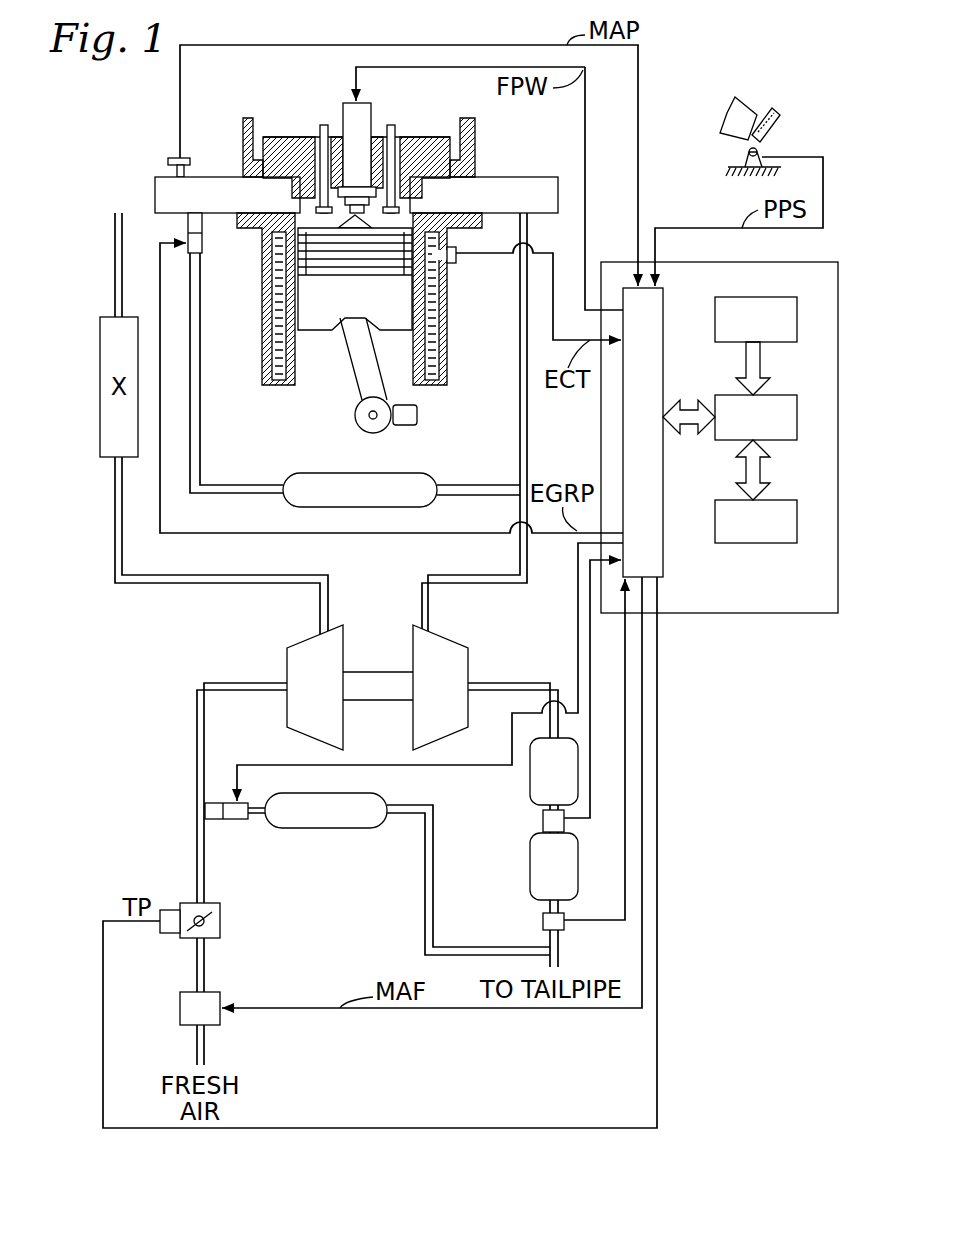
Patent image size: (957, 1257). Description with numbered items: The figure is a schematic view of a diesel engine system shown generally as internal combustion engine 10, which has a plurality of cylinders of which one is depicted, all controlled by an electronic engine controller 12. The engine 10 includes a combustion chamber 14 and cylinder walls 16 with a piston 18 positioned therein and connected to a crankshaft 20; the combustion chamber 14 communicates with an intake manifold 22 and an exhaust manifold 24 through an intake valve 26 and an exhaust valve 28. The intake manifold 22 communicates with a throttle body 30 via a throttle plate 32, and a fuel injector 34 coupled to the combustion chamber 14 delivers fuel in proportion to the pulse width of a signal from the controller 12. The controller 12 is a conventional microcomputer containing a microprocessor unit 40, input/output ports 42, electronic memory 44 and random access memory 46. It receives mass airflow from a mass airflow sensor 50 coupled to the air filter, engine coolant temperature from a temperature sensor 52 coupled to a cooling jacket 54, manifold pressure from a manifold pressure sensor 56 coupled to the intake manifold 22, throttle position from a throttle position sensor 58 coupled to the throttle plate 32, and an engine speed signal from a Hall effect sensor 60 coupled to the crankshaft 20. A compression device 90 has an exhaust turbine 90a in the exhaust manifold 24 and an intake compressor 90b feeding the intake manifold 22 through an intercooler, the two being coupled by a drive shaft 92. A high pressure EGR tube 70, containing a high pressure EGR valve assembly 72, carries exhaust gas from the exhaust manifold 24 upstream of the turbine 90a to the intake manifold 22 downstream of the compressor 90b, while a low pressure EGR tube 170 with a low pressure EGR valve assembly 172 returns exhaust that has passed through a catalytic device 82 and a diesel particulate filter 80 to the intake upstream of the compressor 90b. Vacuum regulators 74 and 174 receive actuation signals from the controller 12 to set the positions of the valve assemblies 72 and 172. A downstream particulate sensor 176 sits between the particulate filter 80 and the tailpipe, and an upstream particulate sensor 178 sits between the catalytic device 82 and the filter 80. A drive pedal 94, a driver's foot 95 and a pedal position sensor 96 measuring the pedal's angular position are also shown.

The internal combustion engine 10 is at (353, 334).
The electronic engine controller 12 is at (722, 425).
The combustion chamber 14 is at (322, 222).
The cylinder walls 16 is at (298, 383).
The piston 18 is at (341, 302).
The crankshaft 20 is at (375, 428).
The intake manifold 22 is at (184, 207).
The exhaust manifold 24 is at (509, 207).
The intake valve 26 is at (321, 204).
The exhaust valve 28 is at (391, 209).
The throttle body 30 is at (201, 901).
The throttle plate 32 is at (186, 920).
The fuel injector 34 is at (355, 120).
The microprocessor unit 40 is at (773, 395).
The input/output ports 42 is at (663, 305).
The electronic memory 44 is at (745, 297).
The random access memory 46 is at (773, 500).
The mass airflow sensor 50 is at (222, 1003).
The temperature sensor 52 is at (456, 256).
The cooling jacket 54 is at (432, 343).
The manifold pressure sensor 56 is at (170, 163).
The throttle position sensor 58 is at (170, 935).
The Hall effect sensor 60 is at (407, 424).
The high pressure EGR tube 70 is at (215, 487).
The high pressure EGR valve assembly 72 is at (198, 226).
The vacuum regulator 74 is at (183, 242).
The diesel particulate filter 80 is at (541, 878).
The catalytic device 82 is at (541, 783).
The compression device 90 is at (322, 687).
The exhaust turbine 90a is at (422, 706).
The intake compressor 90b is at (297, 706).
The drive shaft 92 is at (368, 672).
The drive pedal 94 is at (748, 134).
The driver's foot 95 is at (727, 117).
The pedal position sensor 96 is at (745, 157).
The low pressure EGR tube 170 is at (425, 872).
The low pressure EGR valve assembly 172 is at (237, 820).
The vacuum regulator 174 is at (213, 802).
The particulate sensor 176 is at (565, 928).
The particulate sensor 178 is at (565, 824).